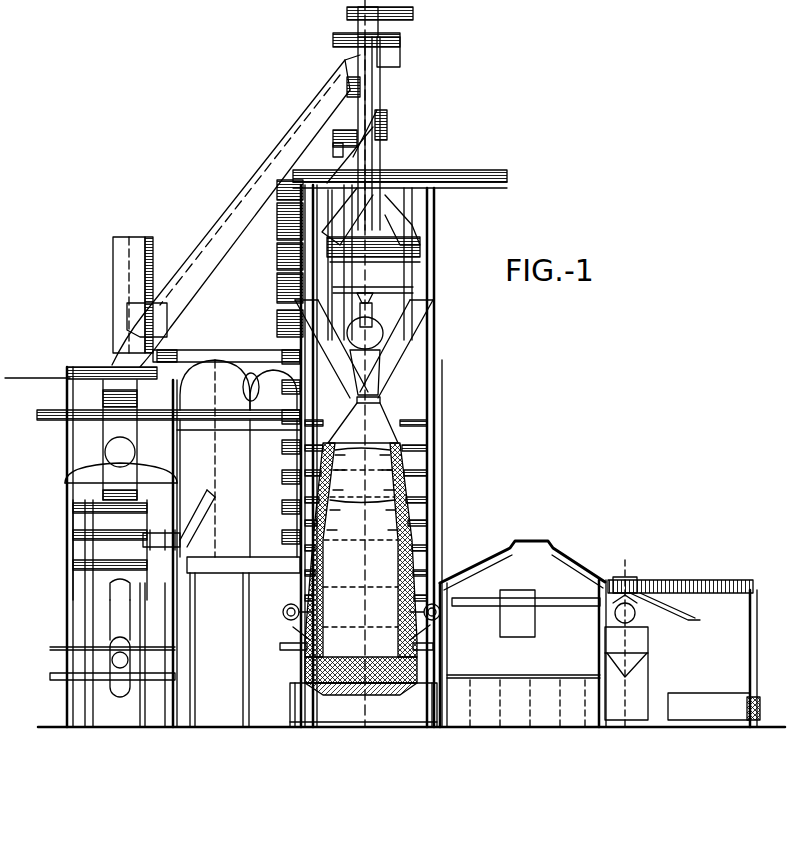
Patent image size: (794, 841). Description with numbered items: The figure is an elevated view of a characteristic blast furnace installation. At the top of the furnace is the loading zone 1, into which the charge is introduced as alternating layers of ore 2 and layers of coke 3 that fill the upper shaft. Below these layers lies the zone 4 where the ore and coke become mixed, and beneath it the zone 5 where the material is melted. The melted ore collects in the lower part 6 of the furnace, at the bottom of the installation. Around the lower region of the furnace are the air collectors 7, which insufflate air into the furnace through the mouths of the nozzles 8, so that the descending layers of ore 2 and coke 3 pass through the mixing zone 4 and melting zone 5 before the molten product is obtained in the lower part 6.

The loading zone 1 is at (382, 430).
The layers of ore 2 is at (390, 453).
The layers of coke 3 is at (387, 447).
The mixing zone 4 is at (387, 557).
The melting zone 5 is at (370, 597).
The lower part of the furnace 6 is at (385, 647).
The air collectors 7 is at (287, 617).
The nozzles 8 is at (312, 650).